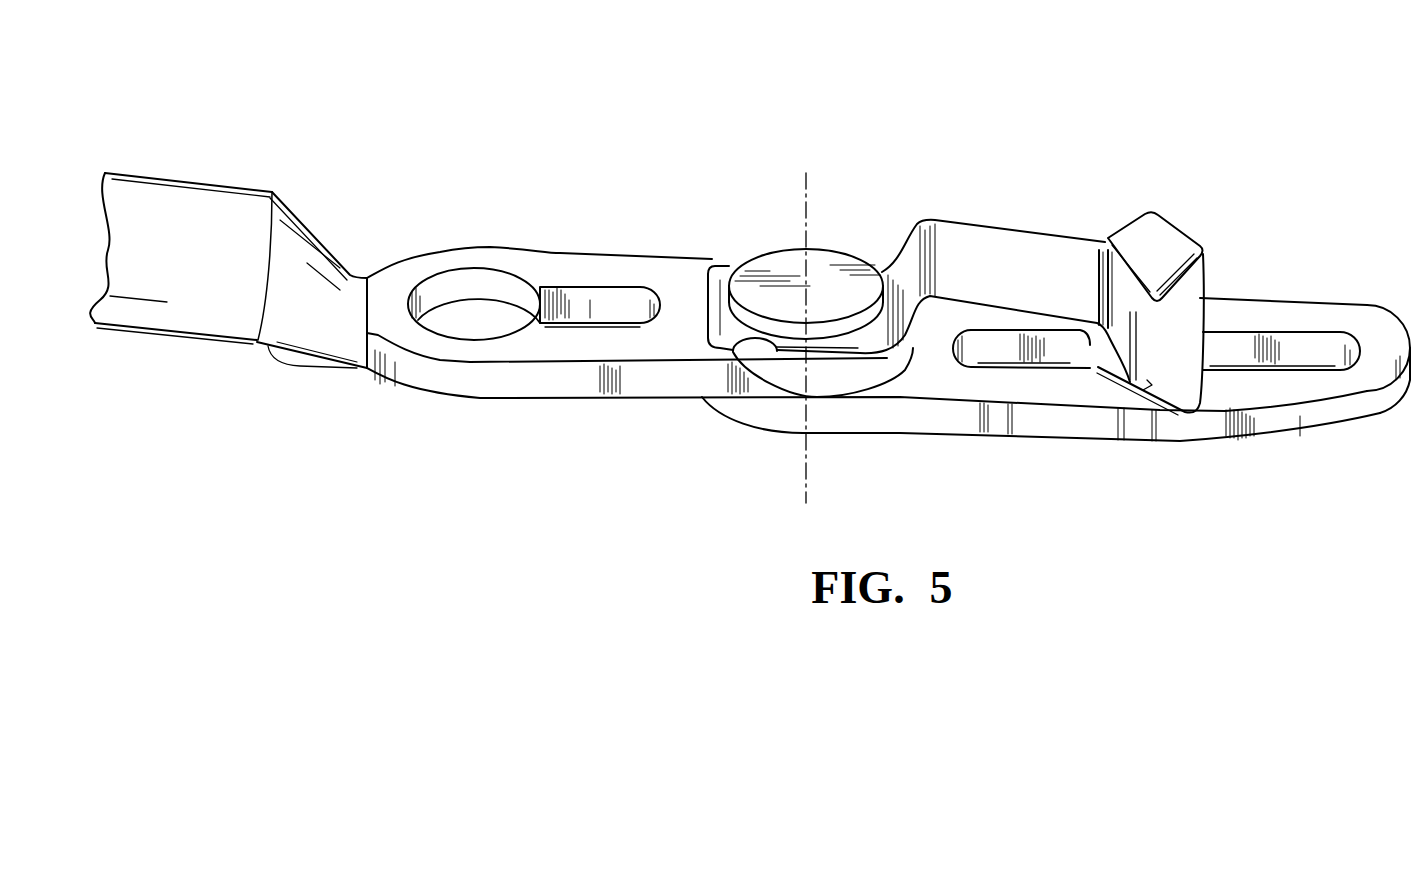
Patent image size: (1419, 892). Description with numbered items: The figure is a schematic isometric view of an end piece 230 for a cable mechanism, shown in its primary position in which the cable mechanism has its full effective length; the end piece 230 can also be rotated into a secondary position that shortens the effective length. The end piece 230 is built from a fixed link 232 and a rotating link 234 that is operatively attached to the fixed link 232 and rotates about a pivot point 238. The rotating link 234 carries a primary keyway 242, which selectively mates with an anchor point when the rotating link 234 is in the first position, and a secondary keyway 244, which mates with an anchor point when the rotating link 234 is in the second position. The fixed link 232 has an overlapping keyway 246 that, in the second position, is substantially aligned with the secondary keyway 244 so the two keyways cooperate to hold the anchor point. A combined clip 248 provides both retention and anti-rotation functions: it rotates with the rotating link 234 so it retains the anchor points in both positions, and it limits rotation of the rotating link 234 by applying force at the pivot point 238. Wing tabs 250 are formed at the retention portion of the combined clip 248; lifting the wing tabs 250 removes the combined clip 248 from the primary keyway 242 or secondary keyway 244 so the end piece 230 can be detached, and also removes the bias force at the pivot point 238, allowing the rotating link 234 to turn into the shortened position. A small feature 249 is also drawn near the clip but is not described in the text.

The end piece 230 is at (514, 96).
The fixed link 232 is at (642, 383).
The rotating link 234 is at (1290, 422).
The pivot point 238 is at (778, 258).
The primary keyway 242 is at (1300, 350).
The secondary keyway 244 is at (1053, 357).
The overlapping keyway 246 is at (594, 300).
The combined clip 248 is at (1010, 257).
The detent protrusion 249 is at (753, 338).
The wing tabs 250 is at (1156, 245).